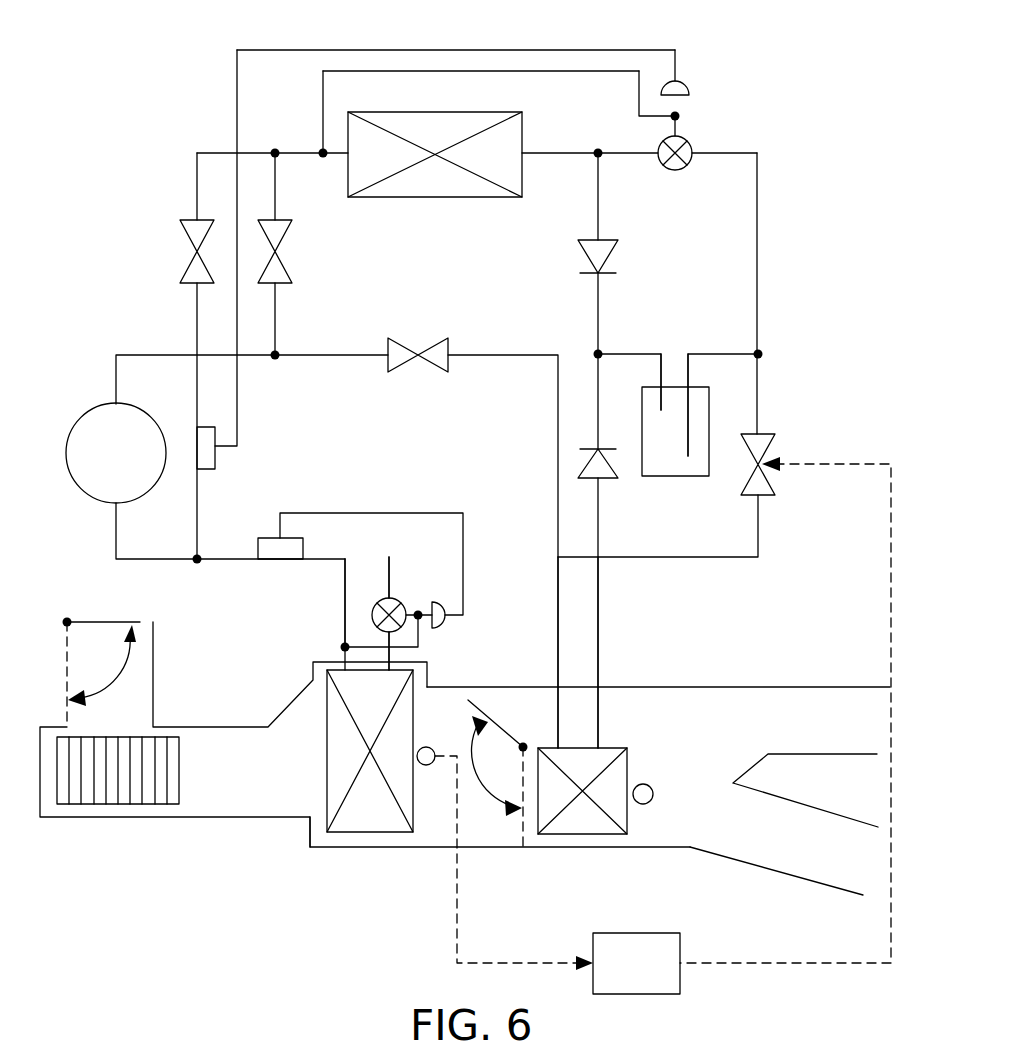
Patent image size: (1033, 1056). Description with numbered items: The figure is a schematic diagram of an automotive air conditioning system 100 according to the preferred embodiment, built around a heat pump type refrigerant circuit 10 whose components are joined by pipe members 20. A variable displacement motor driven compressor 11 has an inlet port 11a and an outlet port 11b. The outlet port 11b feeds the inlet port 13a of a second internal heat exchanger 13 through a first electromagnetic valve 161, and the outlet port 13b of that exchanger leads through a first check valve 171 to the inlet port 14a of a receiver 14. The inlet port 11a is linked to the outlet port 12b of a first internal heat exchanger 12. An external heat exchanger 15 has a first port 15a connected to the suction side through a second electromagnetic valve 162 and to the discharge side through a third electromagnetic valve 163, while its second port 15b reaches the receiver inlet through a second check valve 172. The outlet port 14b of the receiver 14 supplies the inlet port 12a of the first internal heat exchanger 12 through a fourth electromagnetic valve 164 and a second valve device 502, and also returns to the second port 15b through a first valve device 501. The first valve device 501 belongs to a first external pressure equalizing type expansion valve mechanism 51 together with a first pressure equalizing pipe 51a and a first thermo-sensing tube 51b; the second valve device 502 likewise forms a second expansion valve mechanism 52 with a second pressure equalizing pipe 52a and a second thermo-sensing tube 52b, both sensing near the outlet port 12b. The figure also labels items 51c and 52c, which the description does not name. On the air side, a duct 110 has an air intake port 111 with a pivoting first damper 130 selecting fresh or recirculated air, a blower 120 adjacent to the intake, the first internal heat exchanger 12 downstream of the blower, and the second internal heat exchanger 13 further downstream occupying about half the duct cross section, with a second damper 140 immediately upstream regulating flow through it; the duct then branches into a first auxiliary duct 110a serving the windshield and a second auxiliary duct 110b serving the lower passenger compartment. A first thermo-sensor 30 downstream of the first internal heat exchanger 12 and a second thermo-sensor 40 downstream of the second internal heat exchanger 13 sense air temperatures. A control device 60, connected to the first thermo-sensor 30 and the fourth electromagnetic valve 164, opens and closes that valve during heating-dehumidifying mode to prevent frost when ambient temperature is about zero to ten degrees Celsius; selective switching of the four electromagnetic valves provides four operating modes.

The heat pump type refrigerant circuit 10 is at (775, 208).
The pipe member 20 is at (758, 300).
The compressor 11 is at (88, 416).
The inlet port of compressor 11a is at (110, 540).
The outlet port of compressor 11b is at (116, 392).
The first internal heat exchanger 12 is at (373, 835).
The inlet port of first internal heat exchanger 12a is at (420, 660).
The outlet port of first internal heat exchanger 12b is at (340, 662).
The second internal heat exchanger 13 is at (593, 836).
The inlet port of second internal heat exchanger 13a is at (556, 730).
The outlet port of second internal heat exchanger 13b is at (600, 728).
The receiver 14 is at (710, 432).
The inlet port of receiver 14a is at (658, 368).
The outlet port of receiver 14b is at (690, 368).
The external heat exchanger 15 is at (470, 197).
The first port of external heat exchanger 15a is at (338, 158).
The second port of external heat exchanger 15b is at (540, 156).
The first thermo-sensor 30 is at (427, 768).
The second thermo-sensor 40 is at (645, 805).
The first external pressure equalizing type thermal-sensitive expansion valve mechan 51 is at (688, 142).
The first pressure equalizing pipe 51a is at (598, 71).
The first thermo-sensing tube 51b is at (217, 458).
The capillary tube 51c is at (510, 50).
The first valve device 501 is at (694, 156).
The second external pressure equalizing type thermal-sensitive expansion valve mecha 52 is at (382, 600).
The second pressure equalizing pipe 52a is at (432, 640).
The second thermo-sensing tube 52b is at (258, 548).
The capillary tube 52c is at (398, 513).
The second valve device 502 is at (398, 605).
The control device 60 is at (657, 994).
The automotive air conditioning system 100 is at (295, 830).
The duct 110 is at (255, 820).
The first auxiliary duct 110a is at (808, 697).
The second auxiliary duct 110b is at (800, 852).
The air intake port 111 is at (150, 624).
The blower 120 is at (120, 812).
The first damper 130 is at (95, 622).
The second damper 140 is at (520, 832).
The first electromagnetic valve 161 is at (418, 358).
The second electromagnetic valve 162 is at (192, 252).
The third electromagnetic valve 163 is at (280, 252).
The fourth electromagnetic valve 164 is at (776, 440).
The first check valve 171 is at (605, 462).
The second check valve 172 is at (612, 262).